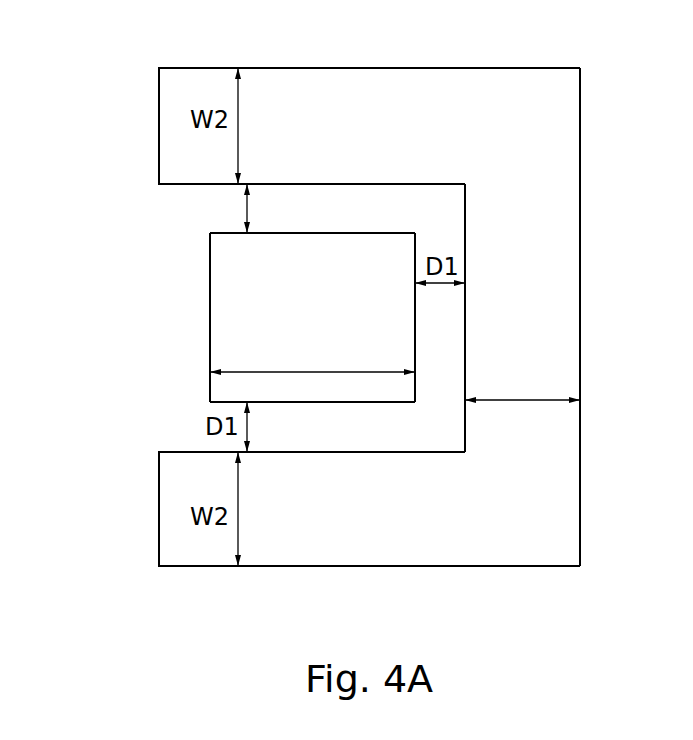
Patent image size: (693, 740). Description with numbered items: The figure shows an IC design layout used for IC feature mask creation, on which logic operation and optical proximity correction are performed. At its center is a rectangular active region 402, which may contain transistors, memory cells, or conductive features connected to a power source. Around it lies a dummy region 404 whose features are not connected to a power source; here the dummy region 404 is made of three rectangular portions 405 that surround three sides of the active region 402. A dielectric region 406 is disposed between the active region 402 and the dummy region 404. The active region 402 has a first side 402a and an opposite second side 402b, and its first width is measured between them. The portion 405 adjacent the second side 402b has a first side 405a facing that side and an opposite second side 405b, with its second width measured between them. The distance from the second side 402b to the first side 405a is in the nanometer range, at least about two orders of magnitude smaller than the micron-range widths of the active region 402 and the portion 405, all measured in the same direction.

The active region 402 is at (336, 322).
The first side of the active region 402a is at (210, 308).
The second side of the active region 402b is at (415, 258).
The dummy region 404 is at (549, 321).
The portion of the dummy region 405 is at (350, 100).
The first side of the portion of the dummy region 405a is at (465, 233).
The second side of the portion of the dummy region 405b is at (580, 200).
The dielectric region 406 is at (413, 225).